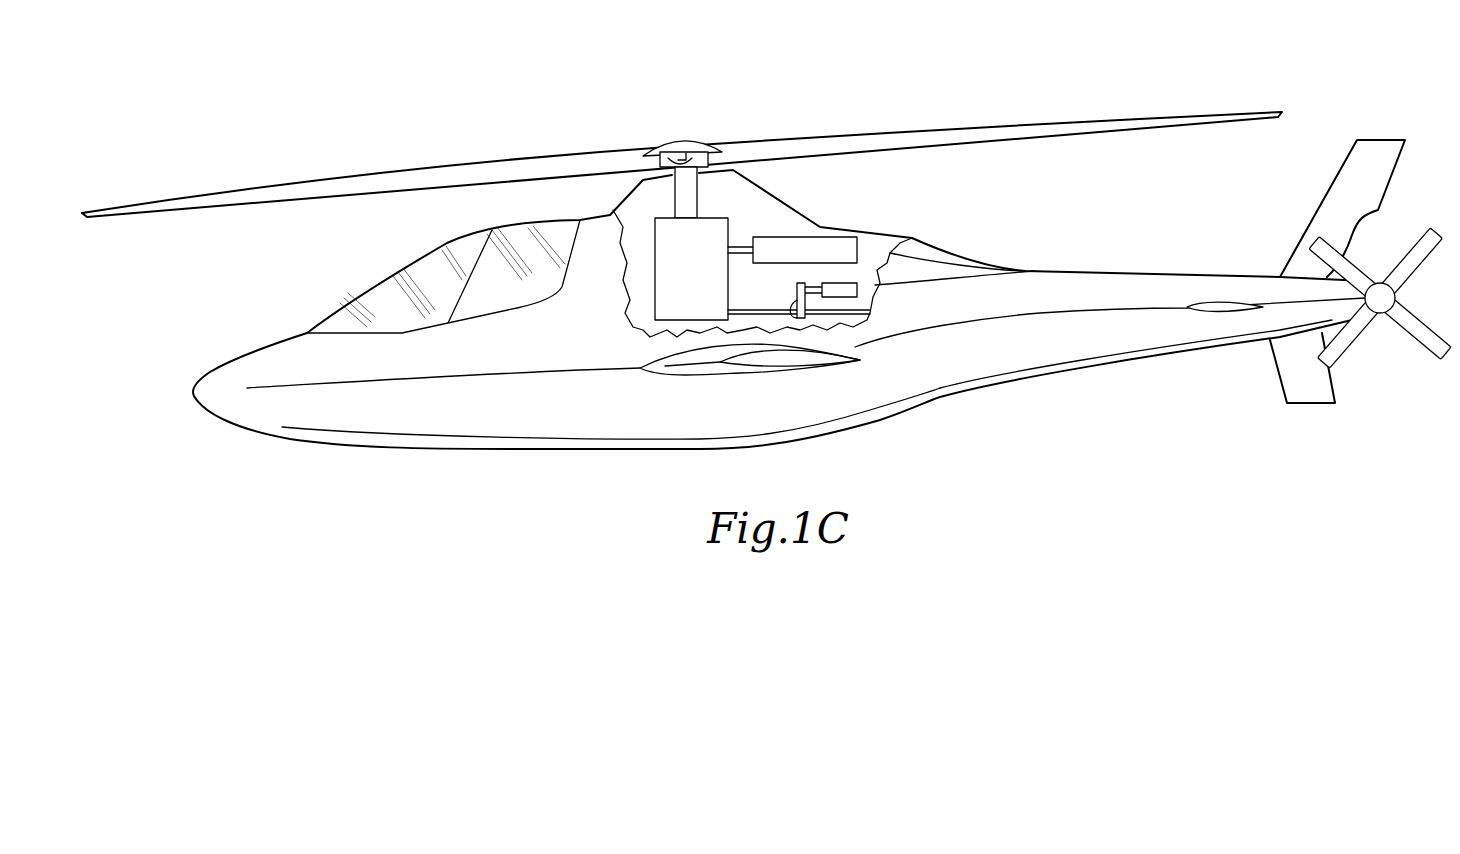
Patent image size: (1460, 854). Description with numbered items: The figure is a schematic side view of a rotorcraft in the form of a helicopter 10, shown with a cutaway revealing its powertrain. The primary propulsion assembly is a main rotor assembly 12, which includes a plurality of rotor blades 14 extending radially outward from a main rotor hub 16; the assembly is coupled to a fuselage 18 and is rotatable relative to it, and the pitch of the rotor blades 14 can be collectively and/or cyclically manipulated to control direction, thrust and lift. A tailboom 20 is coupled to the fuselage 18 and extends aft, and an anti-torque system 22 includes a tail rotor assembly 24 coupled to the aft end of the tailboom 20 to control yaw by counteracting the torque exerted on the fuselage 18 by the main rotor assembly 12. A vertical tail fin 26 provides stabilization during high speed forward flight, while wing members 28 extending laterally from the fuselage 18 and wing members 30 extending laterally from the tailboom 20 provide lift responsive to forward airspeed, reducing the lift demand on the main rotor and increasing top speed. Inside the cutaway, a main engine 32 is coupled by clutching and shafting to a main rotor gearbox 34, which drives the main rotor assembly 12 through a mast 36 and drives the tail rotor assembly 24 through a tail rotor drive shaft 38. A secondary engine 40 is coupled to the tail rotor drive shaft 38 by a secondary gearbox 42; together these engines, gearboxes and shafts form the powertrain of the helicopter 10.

The helicopter 10 is at (877, 82).
The main rotor assembly 12 is at (800, 141).
The rotor blades 14 is at (483, 170).
The main rotor hub 16 is at (682, 140).
The fuselage 18 is at (513, 420).
The tailboom 20 is at (1047, 352).
The anti-torque system 22 is at (1417, 239).
The tail rotor assembly 24 is at (1423, 337).
The vertical tail fin 26 is at (1358, 153).
The wing members 28 is at (688, 373).
The wing members 30 is at (1210, 313).
The main engine 32 is at (842, 240).
The main rotor gearbox 34 is at (705, 283).
The mast 36 is at (692, 197).
The tail rotor drive shaft 38 is at (868, 318).
The secondary engine 40 is at (840, 297).
The secondary gearbox 42 is at (797, 318).